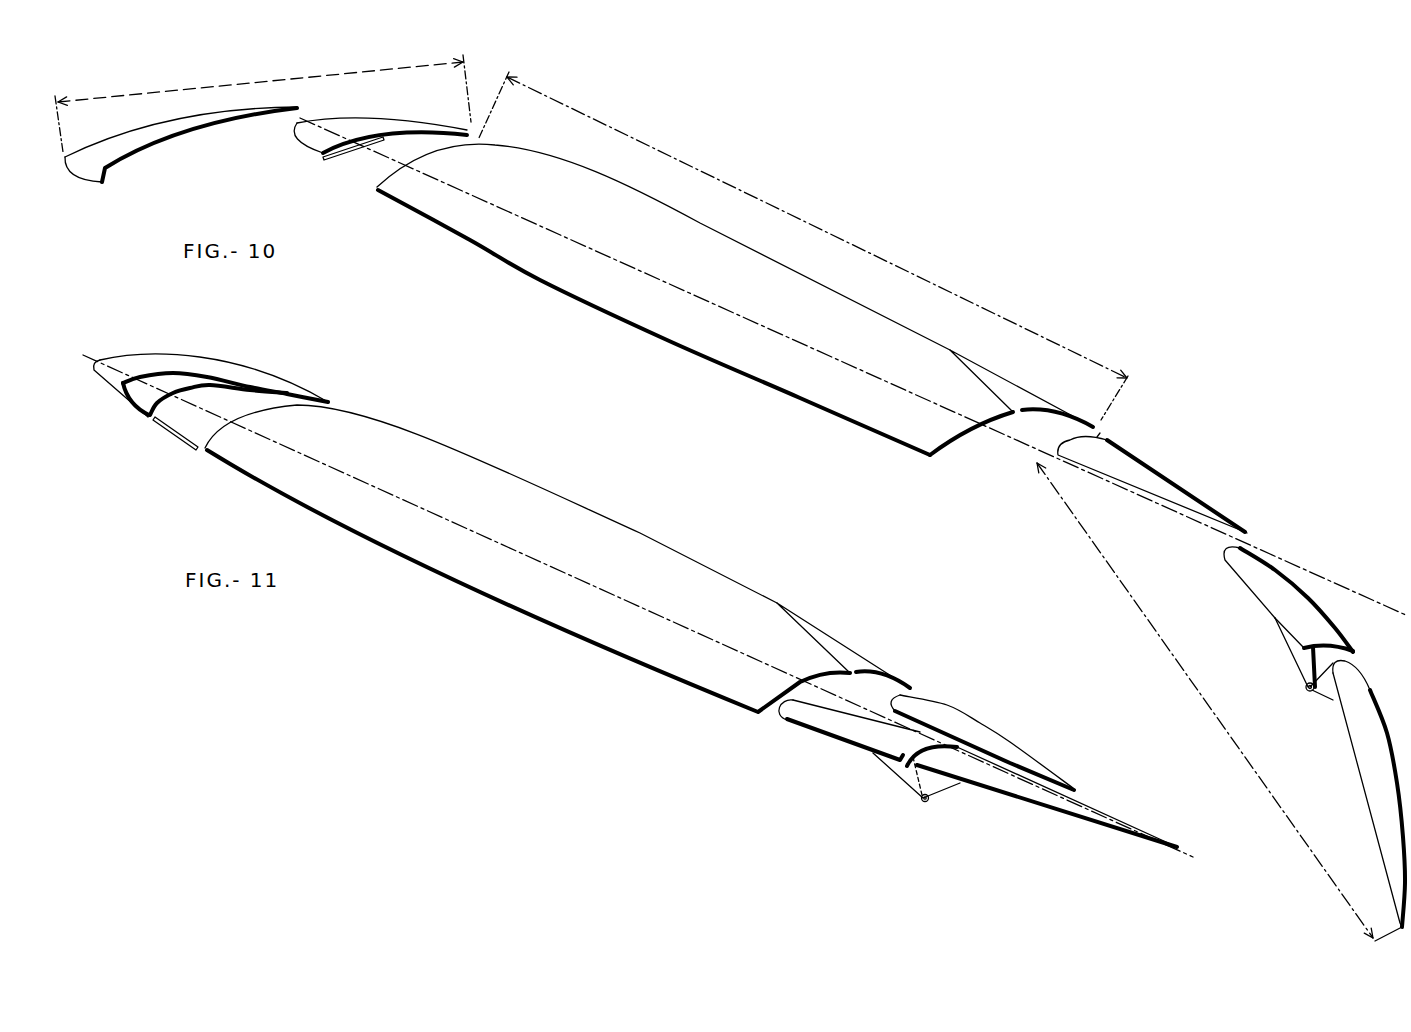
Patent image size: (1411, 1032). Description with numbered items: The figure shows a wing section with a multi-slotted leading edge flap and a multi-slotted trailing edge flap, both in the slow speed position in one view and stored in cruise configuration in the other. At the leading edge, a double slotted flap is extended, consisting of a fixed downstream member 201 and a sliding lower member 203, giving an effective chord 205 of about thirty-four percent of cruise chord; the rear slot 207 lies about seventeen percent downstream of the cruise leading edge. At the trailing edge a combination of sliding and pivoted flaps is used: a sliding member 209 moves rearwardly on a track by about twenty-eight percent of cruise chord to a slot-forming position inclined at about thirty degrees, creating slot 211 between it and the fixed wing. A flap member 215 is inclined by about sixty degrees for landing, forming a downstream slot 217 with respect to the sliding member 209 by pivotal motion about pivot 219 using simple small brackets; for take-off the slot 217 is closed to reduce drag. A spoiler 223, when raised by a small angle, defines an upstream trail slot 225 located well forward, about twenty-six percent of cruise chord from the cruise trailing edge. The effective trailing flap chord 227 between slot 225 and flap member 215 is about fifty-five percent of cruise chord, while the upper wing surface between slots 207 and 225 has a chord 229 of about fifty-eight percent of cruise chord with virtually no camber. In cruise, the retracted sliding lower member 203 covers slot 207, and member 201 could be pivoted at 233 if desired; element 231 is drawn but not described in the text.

In FIG. 10, the fixed downstream member 201 is at (343, 113).
In FIG. 11, the fixed downstream member 201 is at (244, 390).
In FIG. 10, the sliding lower member 203 is at (183, 130).
In FIG. 11, the sliding lower member 203 is at (203, 364).
In FIG. 10, the effective chord 205 is at (246, 64).
In FIG. 10, the rear slot 207 is at (484, 140).
In FIG. 11, the rear slot 207 is at (296, 399).
In FIG. 10, the sliding member 209 is at (1153, 495).
In FIG. 10, the slot 211 is at (1248, 534).
In FIG. 10, the flap member 215 is at (1350, 757).
In FIG. 10, the downstream slot 217 is at (1348, 659).
In FIG. 10, the pivot 219 is at (1305, 690).
In FIG. 10, the spoiler 223 is at (1018, 380).
In FIG. 10, the upstream trail slot 225 is at (1104, 432).
In FIG. 10, the effective trailing flap chord 227 is at (1162, 642).
In FIG. 10, the chord of upper wing surface 229 is at (851, 246).
In FIG. 10, the slat track 231 is at (357, 152).
In FIG. 11, the slat track 231 is at (176, 436).
In FIG. 11, the pivot point 233 is at (137, 403).